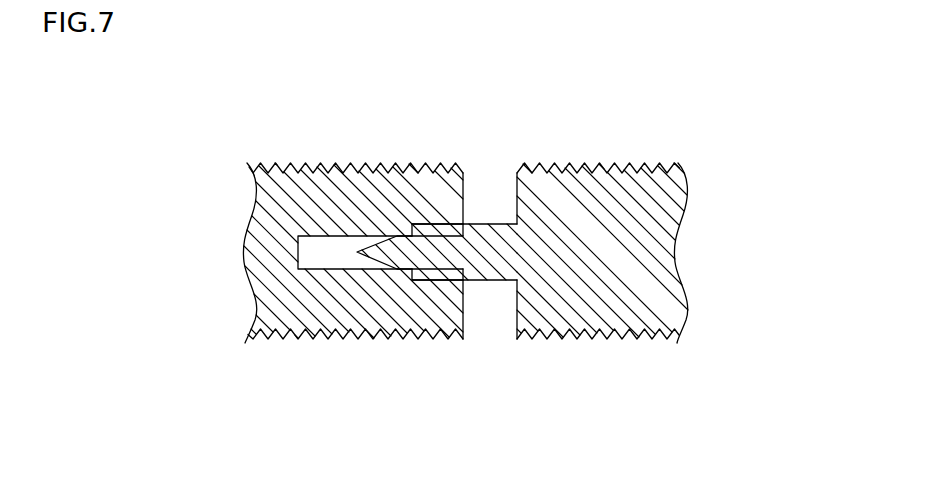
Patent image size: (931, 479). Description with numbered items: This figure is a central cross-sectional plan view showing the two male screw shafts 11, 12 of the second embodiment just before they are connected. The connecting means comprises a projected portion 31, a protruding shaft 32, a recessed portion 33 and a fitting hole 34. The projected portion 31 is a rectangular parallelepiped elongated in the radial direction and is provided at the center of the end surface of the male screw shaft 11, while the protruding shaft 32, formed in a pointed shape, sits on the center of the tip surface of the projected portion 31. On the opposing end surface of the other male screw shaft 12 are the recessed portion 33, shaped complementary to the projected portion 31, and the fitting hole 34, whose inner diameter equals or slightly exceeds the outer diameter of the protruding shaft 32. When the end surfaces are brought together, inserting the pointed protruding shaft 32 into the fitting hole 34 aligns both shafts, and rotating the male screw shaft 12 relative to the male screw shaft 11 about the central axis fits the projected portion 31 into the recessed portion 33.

The male screw shaft 11 is at (592, 165).
The male screw shaft 12 is at (322, 164).
The projected portion 31 is at (496, 224).
The protruding shaft 32 is at (440, 230).
The recessed portion 33 is at (425, 280).
The fitting hole 34 is at (338, 268).